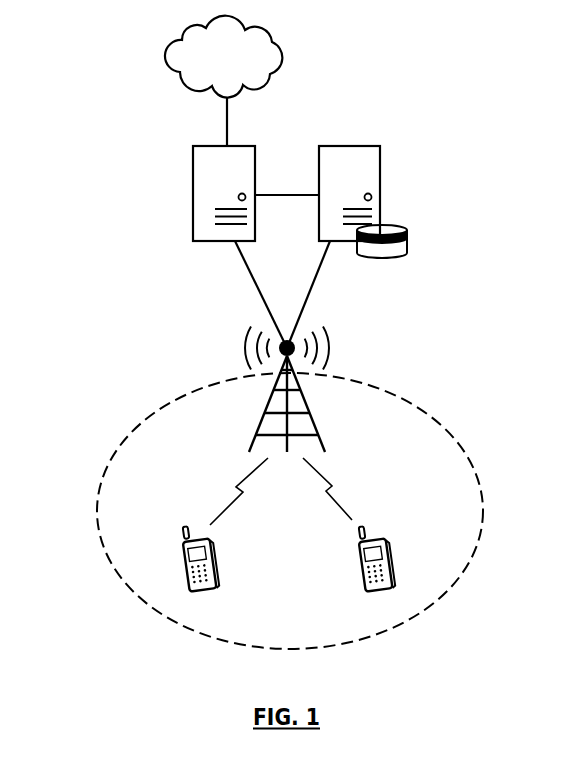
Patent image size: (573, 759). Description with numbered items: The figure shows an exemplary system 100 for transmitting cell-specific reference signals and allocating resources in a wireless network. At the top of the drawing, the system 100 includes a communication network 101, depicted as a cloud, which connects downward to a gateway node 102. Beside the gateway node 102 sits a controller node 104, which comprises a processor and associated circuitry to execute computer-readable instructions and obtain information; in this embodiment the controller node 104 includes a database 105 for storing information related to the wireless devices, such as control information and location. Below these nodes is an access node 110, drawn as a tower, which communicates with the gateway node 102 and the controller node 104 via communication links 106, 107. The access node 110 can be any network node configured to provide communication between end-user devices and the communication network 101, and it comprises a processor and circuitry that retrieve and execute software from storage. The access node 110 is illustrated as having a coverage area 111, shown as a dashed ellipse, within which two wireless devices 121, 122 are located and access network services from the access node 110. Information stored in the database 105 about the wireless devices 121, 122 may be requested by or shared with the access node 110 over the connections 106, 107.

The system 100 is at (334, 83).
The communication network 101 is at (249, 68).
The gateway node 102 is at (193, 167).
The controller node 104 is at (382, 163).
The database 105 is at (407, 230).
The communication link 106 is at (251, 273).
The communication link 107 is at (315, 273).
The access node 110 is at (262, 432).
The coverage area 111 is at (126, 588).
The wireless device 121 is at (218, 573).
The wireless device 122 is at (393, 562).